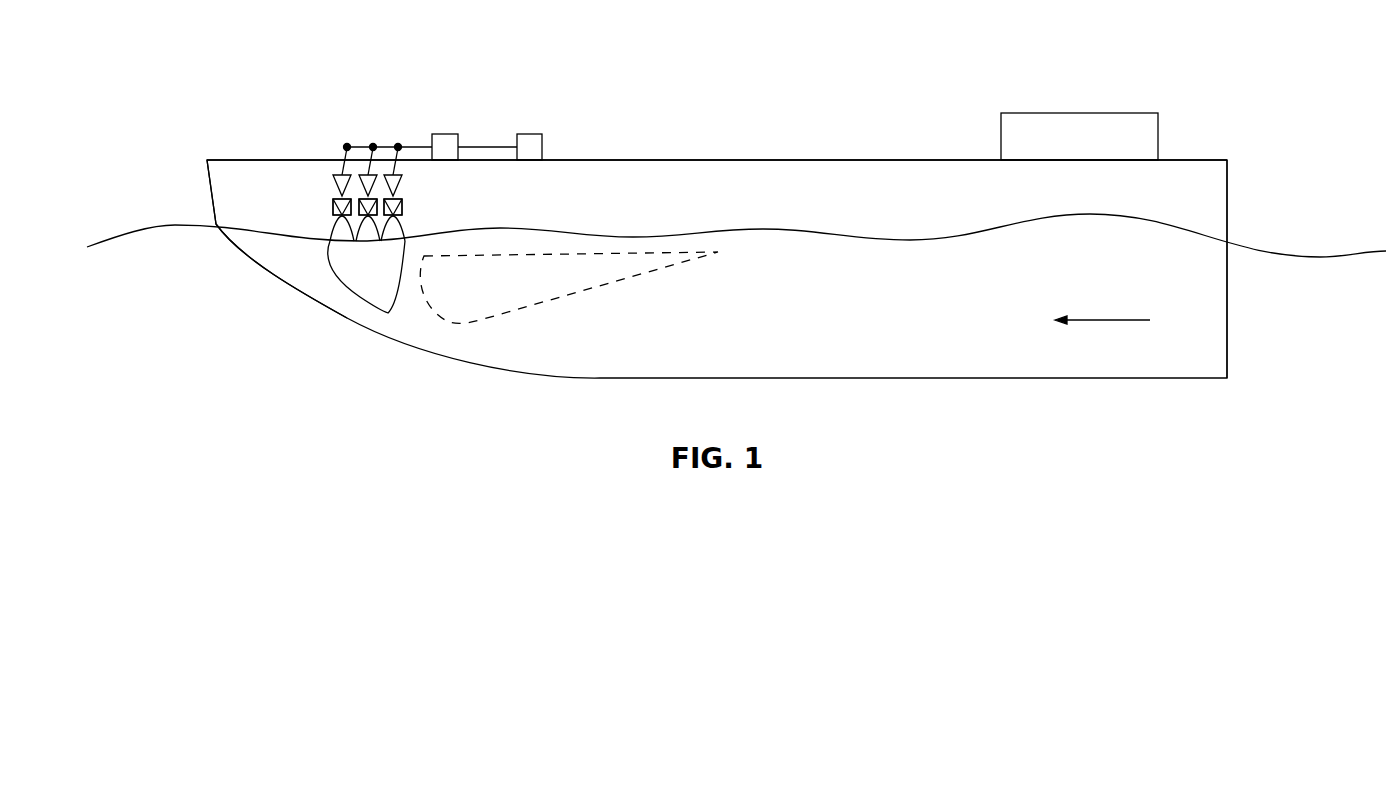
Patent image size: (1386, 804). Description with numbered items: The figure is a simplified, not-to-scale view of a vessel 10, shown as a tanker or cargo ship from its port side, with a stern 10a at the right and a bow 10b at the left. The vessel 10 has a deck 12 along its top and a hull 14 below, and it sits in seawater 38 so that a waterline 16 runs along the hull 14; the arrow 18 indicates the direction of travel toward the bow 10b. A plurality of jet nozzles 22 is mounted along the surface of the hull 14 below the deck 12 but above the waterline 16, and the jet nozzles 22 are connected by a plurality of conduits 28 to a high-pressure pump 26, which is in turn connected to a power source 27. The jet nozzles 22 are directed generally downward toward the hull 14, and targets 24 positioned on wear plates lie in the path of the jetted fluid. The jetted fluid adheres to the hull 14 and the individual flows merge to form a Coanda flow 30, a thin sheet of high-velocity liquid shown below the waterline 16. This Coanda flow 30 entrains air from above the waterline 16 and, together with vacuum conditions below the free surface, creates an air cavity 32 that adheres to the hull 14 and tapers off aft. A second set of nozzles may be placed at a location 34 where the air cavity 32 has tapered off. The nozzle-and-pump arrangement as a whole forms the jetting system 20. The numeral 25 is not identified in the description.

The vessel 10 is at (719, 210).
The stern 10a is at (1230, 186).
The bow 10b is at (210, 198).
The deck 12 is at (672, 160).
The hull 14 is at (741, 332).
The waterline 16 is at (1338, 253).
The arrow 18 is at (1115, 320).
The sonar system 20 is at (495, 211).
The jet nozzles 22 is at (338, 190).
The targets 24 is at (402, 212).
The transducer element 25 is at (397, 198).
The high-pressure pump 26 is at (445, 133).
The power source 27 is at (530, 133).
The conduits 28 is at (360, 146).
The Coanda flow 30 is at (345, 267).
The air cavity 32 is at (555, 283).
The location 34 is at (741, 207).
The seawater 38 is at (1301, 332).